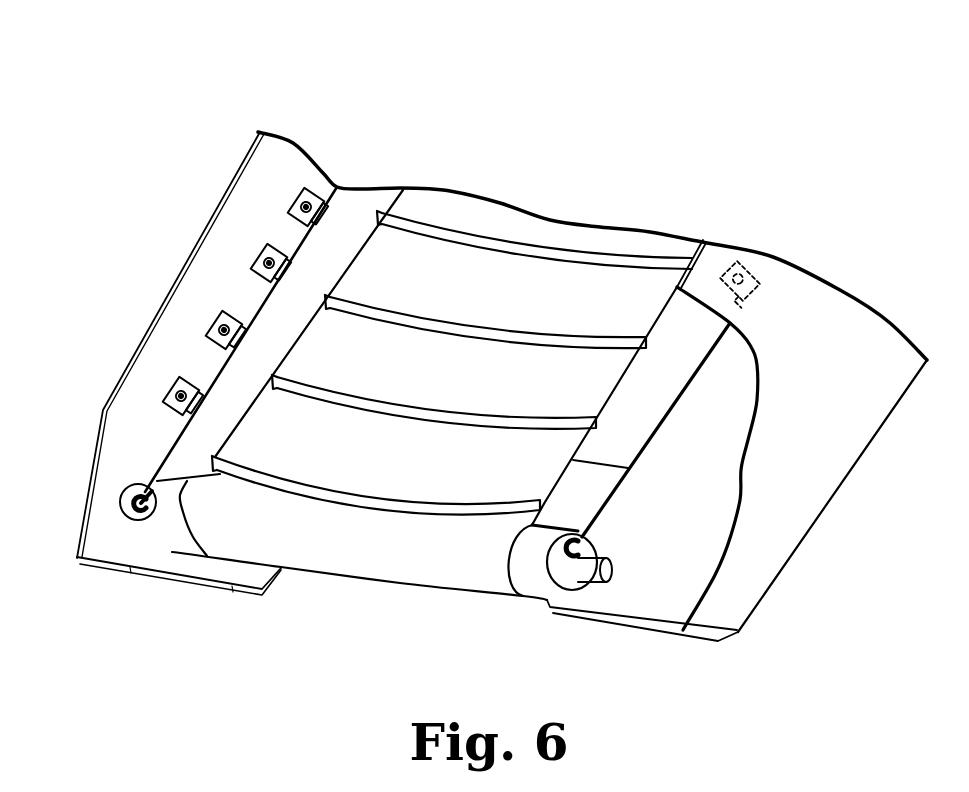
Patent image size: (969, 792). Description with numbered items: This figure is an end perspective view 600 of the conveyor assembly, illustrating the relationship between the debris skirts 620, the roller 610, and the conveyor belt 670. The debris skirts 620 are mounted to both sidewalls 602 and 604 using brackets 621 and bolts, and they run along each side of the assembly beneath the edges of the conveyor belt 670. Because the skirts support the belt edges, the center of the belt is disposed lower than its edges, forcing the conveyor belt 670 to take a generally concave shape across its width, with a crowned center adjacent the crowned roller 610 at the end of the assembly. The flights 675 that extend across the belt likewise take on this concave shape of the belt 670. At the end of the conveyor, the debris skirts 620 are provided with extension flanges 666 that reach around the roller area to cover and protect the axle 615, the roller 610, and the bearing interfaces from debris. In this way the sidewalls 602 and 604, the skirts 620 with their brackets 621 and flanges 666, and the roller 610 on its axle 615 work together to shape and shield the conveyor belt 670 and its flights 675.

The end perspective view 600 is at (397, 83).
The sidewall 602 is at (252, 180).
The sidewall 604 is at (787, 510).
The crowned roller 610 is at (537, 570).
The axle 615 is at (590, 570).
The debris skirt 620 is at (680, 367).
The bracket 621 is at (292, 205).
The extension flange 666 is at (137, 490).
The conveyor belt 670 is at (333, 550).
The flight 675 is at (537, 330).